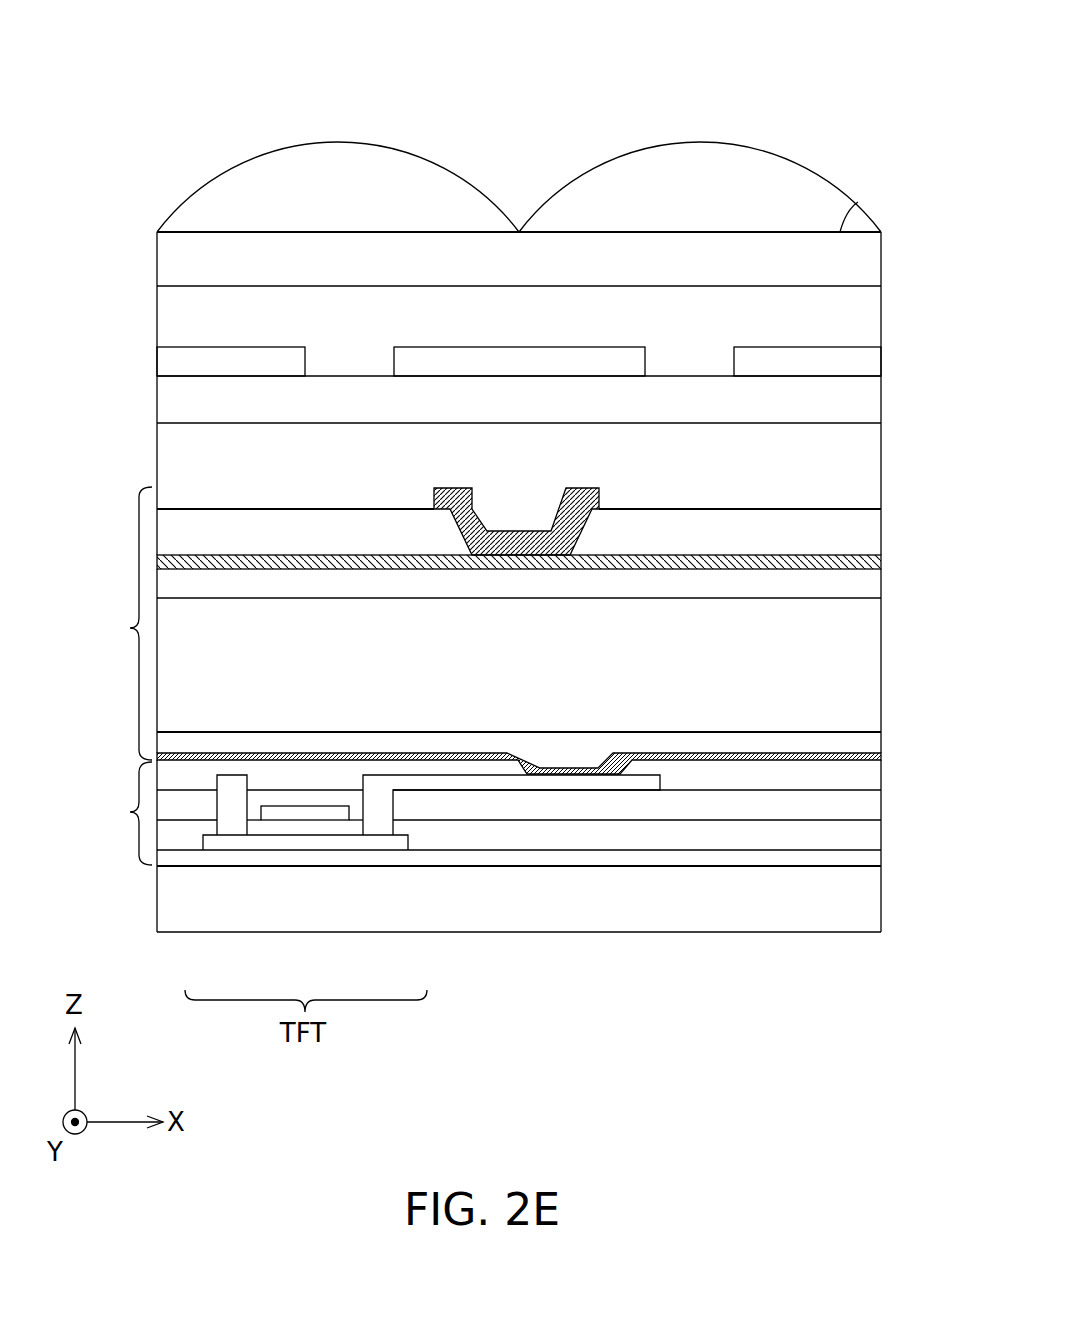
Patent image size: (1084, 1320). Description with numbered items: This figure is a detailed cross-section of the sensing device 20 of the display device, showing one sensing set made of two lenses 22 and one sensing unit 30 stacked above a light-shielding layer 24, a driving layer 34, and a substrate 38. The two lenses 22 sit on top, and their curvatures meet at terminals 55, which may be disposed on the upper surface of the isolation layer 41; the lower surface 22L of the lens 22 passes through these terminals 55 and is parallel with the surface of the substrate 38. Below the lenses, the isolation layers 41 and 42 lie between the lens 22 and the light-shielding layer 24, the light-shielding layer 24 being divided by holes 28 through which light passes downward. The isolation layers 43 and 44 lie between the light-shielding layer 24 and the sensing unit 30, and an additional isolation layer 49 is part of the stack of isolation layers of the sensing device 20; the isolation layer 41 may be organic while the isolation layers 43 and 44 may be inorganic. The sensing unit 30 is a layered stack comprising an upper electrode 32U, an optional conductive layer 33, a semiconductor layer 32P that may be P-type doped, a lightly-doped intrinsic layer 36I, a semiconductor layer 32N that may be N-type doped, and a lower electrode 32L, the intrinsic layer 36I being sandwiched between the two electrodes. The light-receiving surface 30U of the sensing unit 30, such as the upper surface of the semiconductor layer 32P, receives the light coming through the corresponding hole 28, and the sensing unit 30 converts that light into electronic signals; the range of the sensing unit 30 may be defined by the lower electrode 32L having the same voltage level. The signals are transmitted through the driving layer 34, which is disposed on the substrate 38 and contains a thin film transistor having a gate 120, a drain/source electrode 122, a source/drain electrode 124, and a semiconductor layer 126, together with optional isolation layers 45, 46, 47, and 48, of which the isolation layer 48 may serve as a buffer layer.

The sensing device 20 is at (818, 69).
The lens 22 is at (322, 199).
The lower surface of the lens 22L is at (858, 202).
The terminals of the lenses 55 is at (519, 230).
The isolation layer 41 is at (865, 265).
The isolation layer 42 is at (865, 325).
The light-shielding layer 24 is at (172, 366).
The hole 28 is at (348, 366).
The isolation layer 43 is at (865, 406).
The isolation layer 49 is at (865, 468).
The upper electrode 32U is at (578, 488).
The isolation layer 44 is at (865, 526).
The conductive layer 33 is at (868, 566).
The semiconductor layer 32P is at (866, 592).
The light-receiving surface 30U is at (768, 560).
The intrinsic layer 36I is at (865, 672).
The semiconductor layer 32N is at (866, 733).
The lower electrode 32L is at (866, 758).
The isolation layer 45 is at (866, 789).
The isolation layer 46 is at (866, 820).
The isolation layer 47 is at (866, 848).
The isolation layer 48 is at (866, 866).
The sensing unit 30 is at (120, 623).
The driving layer 34 is at (120, 813).
The substrate 38 is at (182, 900).
The drain/source electrode 122 is at (231, 813).
The gate 120 is at (293, 813).
The semiconductor layer 126 is at (337, 843).
The source/drain electrode 124 is at (381, 813).